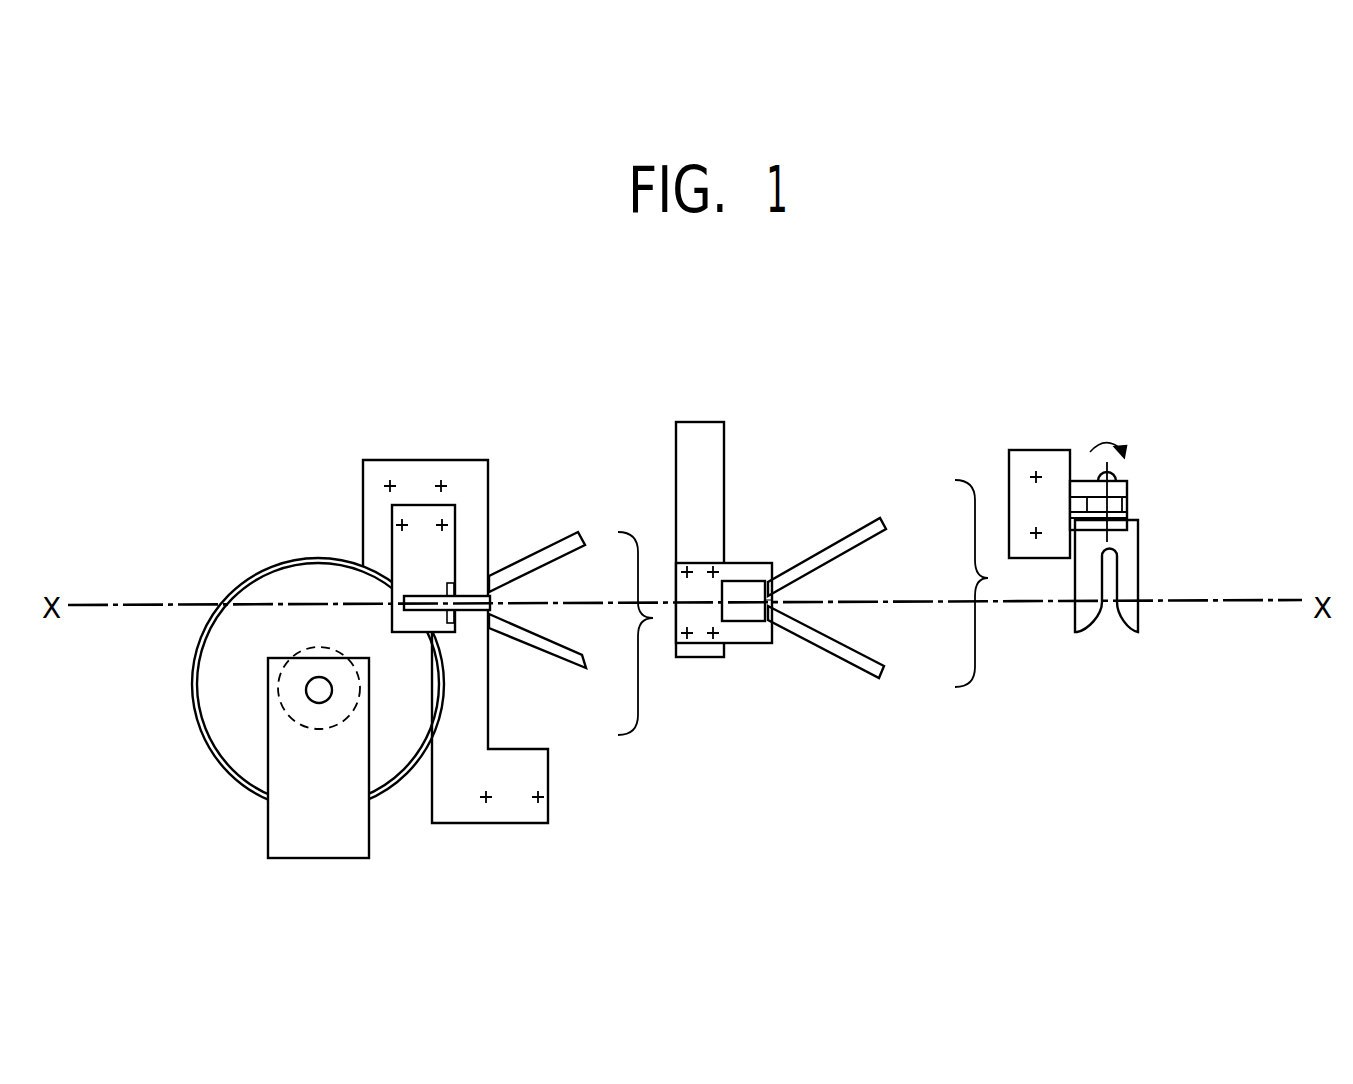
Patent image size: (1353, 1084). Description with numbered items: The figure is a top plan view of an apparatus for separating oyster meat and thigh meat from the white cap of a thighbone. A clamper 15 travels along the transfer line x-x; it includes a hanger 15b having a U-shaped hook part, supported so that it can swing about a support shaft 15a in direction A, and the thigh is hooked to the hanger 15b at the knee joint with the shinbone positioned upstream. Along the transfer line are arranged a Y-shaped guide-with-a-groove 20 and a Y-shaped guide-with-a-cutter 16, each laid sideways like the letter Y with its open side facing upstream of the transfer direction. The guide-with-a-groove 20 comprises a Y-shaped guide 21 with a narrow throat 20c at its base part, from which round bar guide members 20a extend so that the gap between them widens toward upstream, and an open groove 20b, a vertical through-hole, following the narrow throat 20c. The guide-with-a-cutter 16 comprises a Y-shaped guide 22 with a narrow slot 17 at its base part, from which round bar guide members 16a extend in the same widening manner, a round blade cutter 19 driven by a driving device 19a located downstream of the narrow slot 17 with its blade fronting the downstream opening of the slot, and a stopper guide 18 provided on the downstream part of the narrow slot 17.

The clamper 15 is at (1047, 414).
The support shaft 15a is at (1117, 477).
The hanger 15b is at (1123, 564).
The Y-shaped guide-with-a-cutter 16 is at (337, 442).
The support arms of bracket 16a is at (562, 556).
The narrow slot 17 is at (468, 597).
The stopper guide 18 is at (417, 505).
The round blade cutter 19 is at (215, 768).
The driving device 19a is at (312, 858).
The Y-shaped guide-with-a-groove 20 is at (829, 522).
The round bar guide members 20a is at (886, 530).
The open groove 20b is at (736, 592).
The narrow throat 20c is at (773, 596).
The Y-shaped guide 21 is at (997, 583).
The Y-shaped guide 22 is at (657, 625).